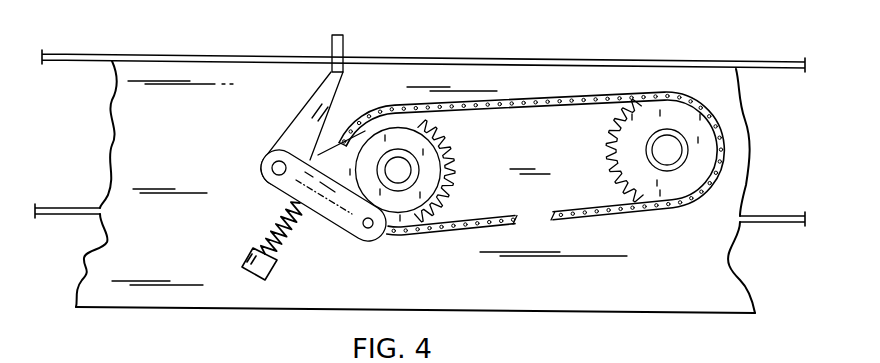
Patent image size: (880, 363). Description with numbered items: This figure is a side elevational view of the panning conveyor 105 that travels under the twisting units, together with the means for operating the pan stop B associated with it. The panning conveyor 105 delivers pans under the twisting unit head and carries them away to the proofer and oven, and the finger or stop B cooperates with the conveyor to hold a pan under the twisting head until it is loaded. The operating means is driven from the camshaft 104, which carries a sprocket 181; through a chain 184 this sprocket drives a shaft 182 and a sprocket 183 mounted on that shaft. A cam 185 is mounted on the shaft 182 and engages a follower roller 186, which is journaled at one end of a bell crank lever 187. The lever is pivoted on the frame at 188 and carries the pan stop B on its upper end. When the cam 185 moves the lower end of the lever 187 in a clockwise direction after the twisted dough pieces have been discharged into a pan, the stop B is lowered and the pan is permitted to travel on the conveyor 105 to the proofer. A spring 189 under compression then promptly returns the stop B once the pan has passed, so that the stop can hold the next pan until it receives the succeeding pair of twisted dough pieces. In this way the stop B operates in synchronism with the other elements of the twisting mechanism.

The panning conveyor 105 is at (97, 54).
The pan stop B is at (343, 46).
The camshaft 104 is at (668, 151).
The sprocket 181 is at (605, 150).
The shaft 182 is at (408, 175).
The sprocket 183 is at (452, 183).
The chain 184 is at (578, 210).
The cam 185 is at (370, 162).
The follower roller 186 is at (372, 240).
The bell crank lever 187 is at (326, 207).
The pivot 188 is at (272, 168).
The spring 189 is at (272, 224).